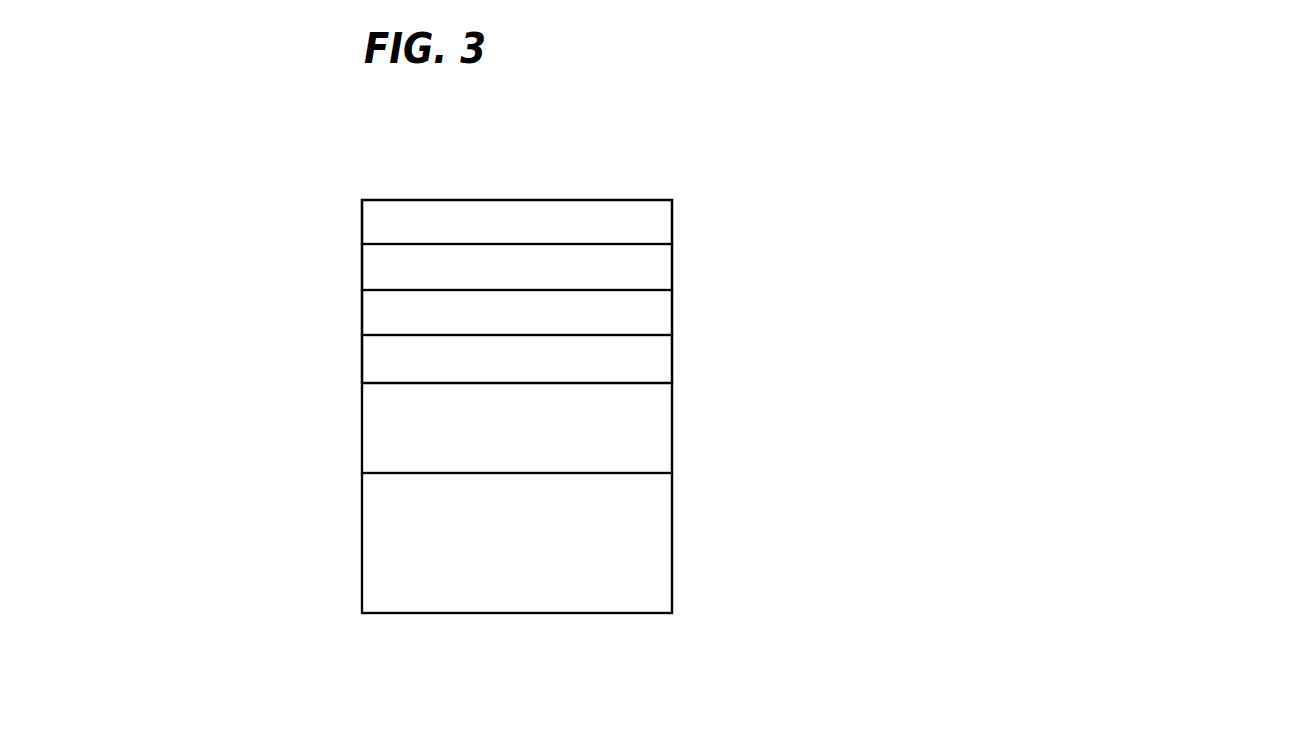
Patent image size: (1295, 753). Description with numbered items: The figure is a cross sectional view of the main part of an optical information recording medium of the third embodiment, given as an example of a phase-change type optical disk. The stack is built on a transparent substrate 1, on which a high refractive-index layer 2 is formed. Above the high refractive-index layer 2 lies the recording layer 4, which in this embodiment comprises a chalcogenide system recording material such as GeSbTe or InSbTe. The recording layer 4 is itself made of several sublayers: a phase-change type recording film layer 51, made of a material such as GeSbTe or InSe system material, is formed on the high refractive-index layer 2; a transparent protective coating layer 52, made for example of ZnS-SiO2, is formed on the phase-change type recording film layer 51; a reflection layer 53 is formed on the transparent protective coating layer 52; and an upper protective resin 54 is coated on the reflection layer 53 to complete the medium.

The transparent substrate 1 is at (656, 556).
The high refractive-index layer 2 is at (660, 416).
The recording layer 4 is at (355, 202).
The phase-change type recording film layer 51 is at (656, 360).
The transparent protective coating layer 52 is at (656, 319).
The reflection layer 53 is at (656, 274).
The upper protective resin 54 is at (656, 229).